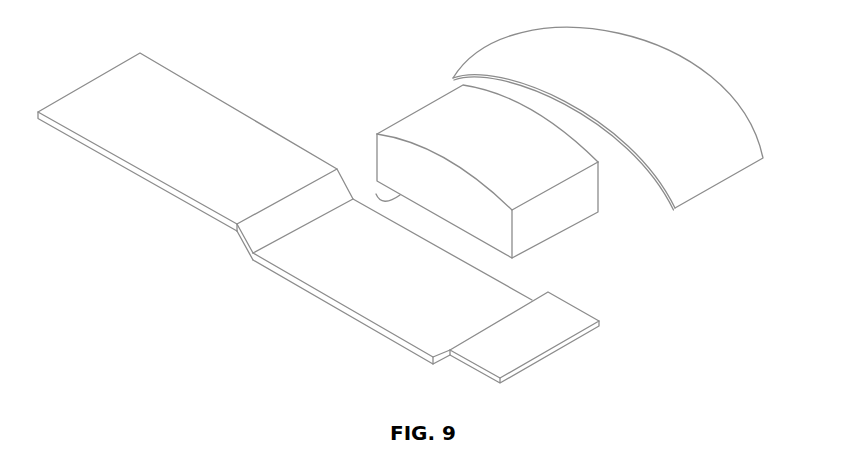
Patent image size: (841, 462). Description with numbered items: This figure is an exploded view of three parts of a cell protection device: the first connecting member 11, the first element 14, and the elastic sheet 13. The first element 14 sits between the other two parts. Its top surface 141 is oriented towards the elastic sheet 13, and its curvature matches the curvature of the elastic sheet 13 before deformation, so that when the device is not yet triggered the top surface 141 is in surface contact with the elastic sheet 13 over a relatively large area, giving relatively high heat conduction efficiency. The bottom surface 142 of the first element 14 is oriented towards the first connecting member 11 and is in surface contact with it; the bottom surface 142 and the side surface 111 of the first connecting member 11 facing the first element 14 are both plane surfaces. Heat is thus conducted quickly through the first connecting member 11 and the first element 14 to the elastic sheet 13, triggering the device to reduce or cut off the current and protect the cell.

The first connecting member 11 is at (350, 220).
The side surface 111 is at (382, 297).
The elastic sheet 13 is at (715, 172).
The first element 14 is at (475, 187).
The top surface 141 is at (442, 111).
The bottom surface 142 is at (376, 194).